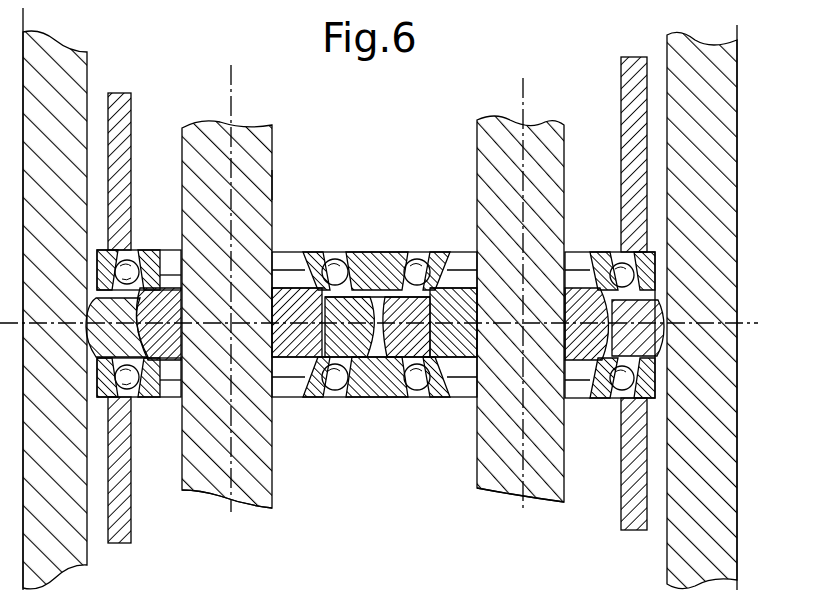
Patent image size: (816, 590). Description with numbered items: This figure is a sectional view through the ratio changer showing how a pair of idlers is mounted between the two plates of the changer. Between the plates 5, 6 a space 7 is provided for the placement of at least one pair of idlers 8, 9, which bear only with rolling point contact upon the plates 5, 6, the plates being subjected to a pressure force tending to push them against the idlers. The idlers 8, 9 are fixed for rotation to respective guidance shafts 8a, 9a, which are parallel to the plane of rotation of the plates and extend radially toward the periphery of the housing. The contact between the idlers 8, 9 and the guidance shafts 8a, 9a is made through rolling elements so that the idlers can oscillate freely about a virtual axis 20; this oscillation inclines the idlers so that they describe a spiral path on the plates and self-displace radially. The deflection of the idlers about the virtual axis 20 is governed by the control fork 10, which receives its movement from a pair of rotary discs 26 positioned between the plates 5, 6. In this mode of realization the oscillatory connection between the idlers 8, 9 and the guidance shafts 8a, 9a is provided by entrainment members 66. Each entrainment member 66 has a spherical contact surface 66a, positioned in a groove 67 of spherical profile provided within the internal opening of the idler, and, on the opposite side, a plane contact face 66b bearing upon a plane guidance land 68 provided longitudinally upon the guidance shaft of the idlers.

The plate 5 is at (75, 73).
The plate 6 is at (670, 535).
The space 7 is at (374, 313).
The idler 8 is at (277, 302).
The guidance shaft 8a is at (203, 470).
The idler 9 is at (477, 309).
The guidance shaft 9a is at (507, 460).
The control fork 10 is at (377, 270).
The virtual axis 20 is at (693, 326).
The rotary disc 26 is at (122, 505).
The entrainment member 66 is at (295, 287).
The spherical contact surface 66a is at (606, 349).
The plane contact face 66b is at (471, 352).
The groove 67 is at (143, 292).
The plane guidance land 68 is at (278, 182).